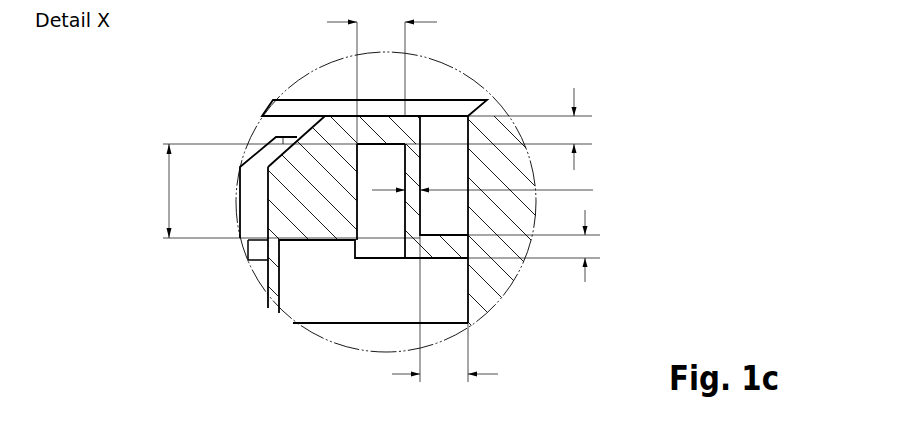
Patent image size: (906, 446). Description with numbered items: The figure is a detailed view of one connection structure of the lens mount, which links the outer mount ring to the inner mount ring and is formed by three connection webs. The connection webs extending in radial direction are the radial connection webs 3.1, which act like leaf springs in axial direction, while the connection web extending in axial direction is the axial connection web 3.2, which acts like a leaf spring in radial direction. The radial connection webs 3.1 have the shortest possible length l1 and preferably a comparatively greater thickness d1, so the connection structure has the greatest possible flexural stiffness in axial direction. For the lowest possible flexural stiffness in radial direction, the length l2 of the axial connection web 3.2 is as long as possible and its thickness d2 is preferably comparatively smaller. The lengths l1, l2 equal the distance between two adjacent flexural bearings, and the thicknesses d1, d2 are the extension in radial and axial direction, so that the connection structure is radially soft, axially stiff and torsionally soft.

The radial connection web 3.1 is at (387, 130).
The axial connection web 3.2 is at (412, 210).
The length of the radial connection webs l1 is at (412, 197).
The length of the axial connection webs l2 is at (286, 191).
The thickness of the radial connection webs d1 is at (509, 185).
The thickness of the axial connection webs d2 is at (497, 193).